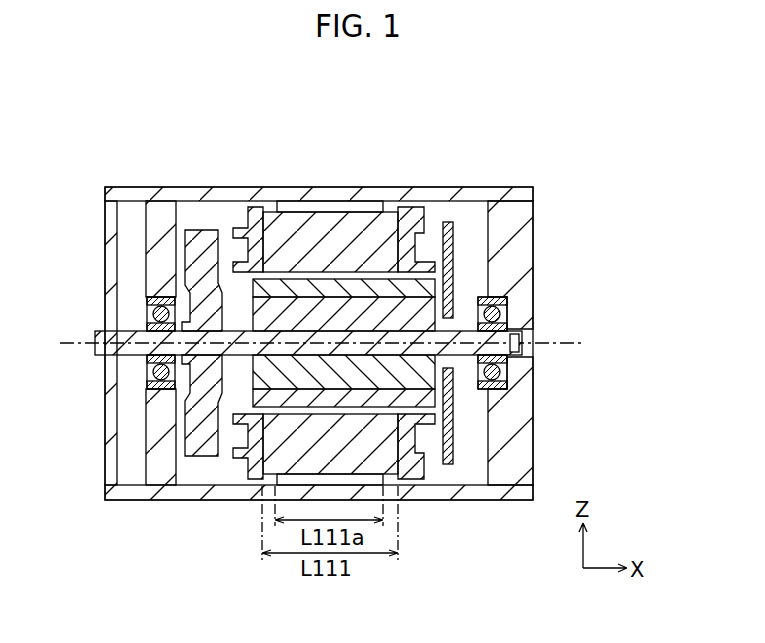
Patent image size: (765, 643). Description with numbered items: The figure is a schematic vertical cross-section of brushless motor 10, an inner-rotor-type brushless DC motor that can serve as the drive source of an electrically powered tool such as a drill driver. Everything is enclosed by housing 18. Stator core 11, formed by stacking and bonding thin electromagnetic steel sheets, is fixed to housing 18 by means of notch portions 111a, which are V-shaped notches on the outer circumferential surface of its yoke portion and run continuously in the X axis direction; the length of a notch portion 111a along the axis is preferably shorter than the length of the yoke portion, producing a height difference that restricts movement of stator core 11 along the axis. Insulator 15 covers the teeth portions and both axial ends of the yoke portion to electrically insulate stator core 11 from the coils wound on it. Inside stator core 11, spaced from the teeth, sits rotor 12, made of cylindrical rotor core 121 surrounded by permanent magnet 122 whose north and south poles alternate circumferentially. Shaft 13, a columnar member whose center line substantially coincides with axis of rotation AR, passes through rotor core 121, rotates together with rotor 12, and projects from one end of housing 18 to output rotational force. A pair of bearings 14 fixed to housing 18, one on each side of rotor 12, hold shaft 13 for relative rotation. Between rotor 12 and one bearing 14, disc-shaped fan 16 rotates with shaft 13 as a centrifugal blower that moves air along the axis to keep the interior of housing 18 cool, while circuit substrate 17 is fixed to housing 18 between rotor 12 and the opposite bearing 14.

The brushless motor 10 is at (537, 153).
The stator core 11 is at (370, 232).
The notch portion 111a is at (363, 474).
The rotor 12 is at (334, 259).
The rotor core 121 is at (288, 306).
The permanent magnet 122 is at (330, 288).
The shaft 13 is at (475, 357).
The bearings 14 is at (503, 288).
The insulator 15 is at (253, 212).
The fan 16 is at (204, 229).
The circuit substrate 17 is at (448, 220).
The housing 18 is at (518, 213).
The axis of rotation AR is at (553, 337).